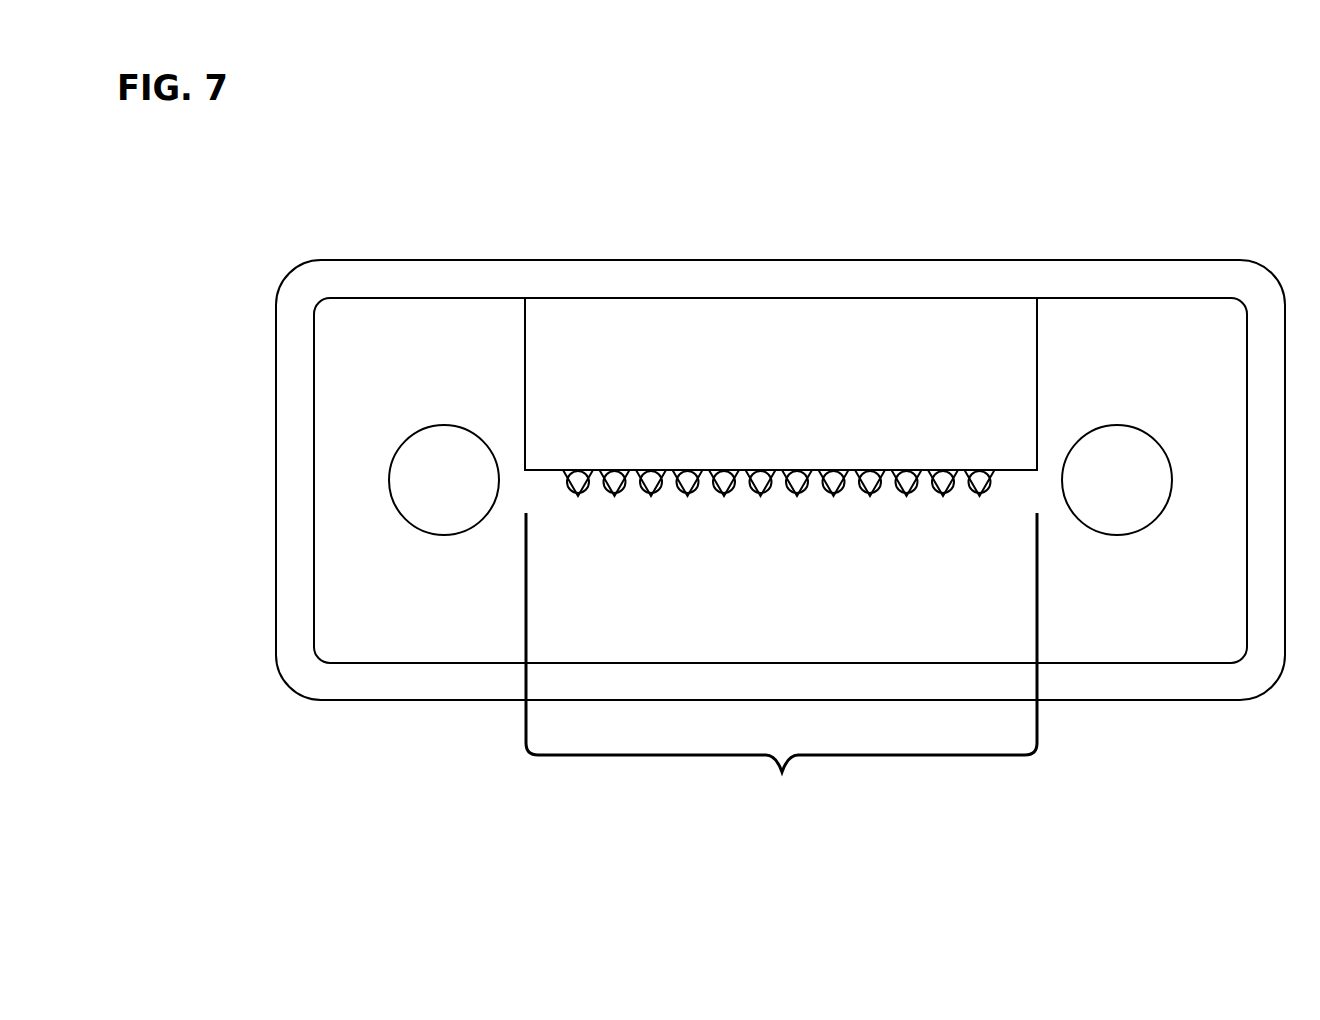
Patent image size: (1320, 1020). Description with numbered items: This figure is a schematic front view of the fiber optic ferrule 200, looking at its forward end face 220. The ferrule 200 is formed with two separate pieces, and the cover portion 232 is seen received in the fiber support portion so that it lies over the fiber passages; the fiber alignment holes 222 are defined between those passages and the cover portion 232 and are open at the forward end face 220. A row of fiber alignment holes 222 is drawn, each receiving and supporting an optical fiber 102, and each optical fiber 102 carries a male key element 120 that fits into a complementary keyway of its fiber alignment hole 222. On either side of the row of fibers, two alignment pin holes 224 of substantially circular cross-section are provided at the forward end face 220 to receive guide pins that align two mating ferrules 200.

The ferrule 200 is at (486, 196).
The forward end face 220 is at (1165, 325).
The fiber alignment holes 222 is at (781, 659).
The alignment pin holes 224 is at (424, 515).
The cover portion 232 is at (813, 333).
The optical fiber 102 is at (578, 480).
The male key element 120 is at (580, 492).